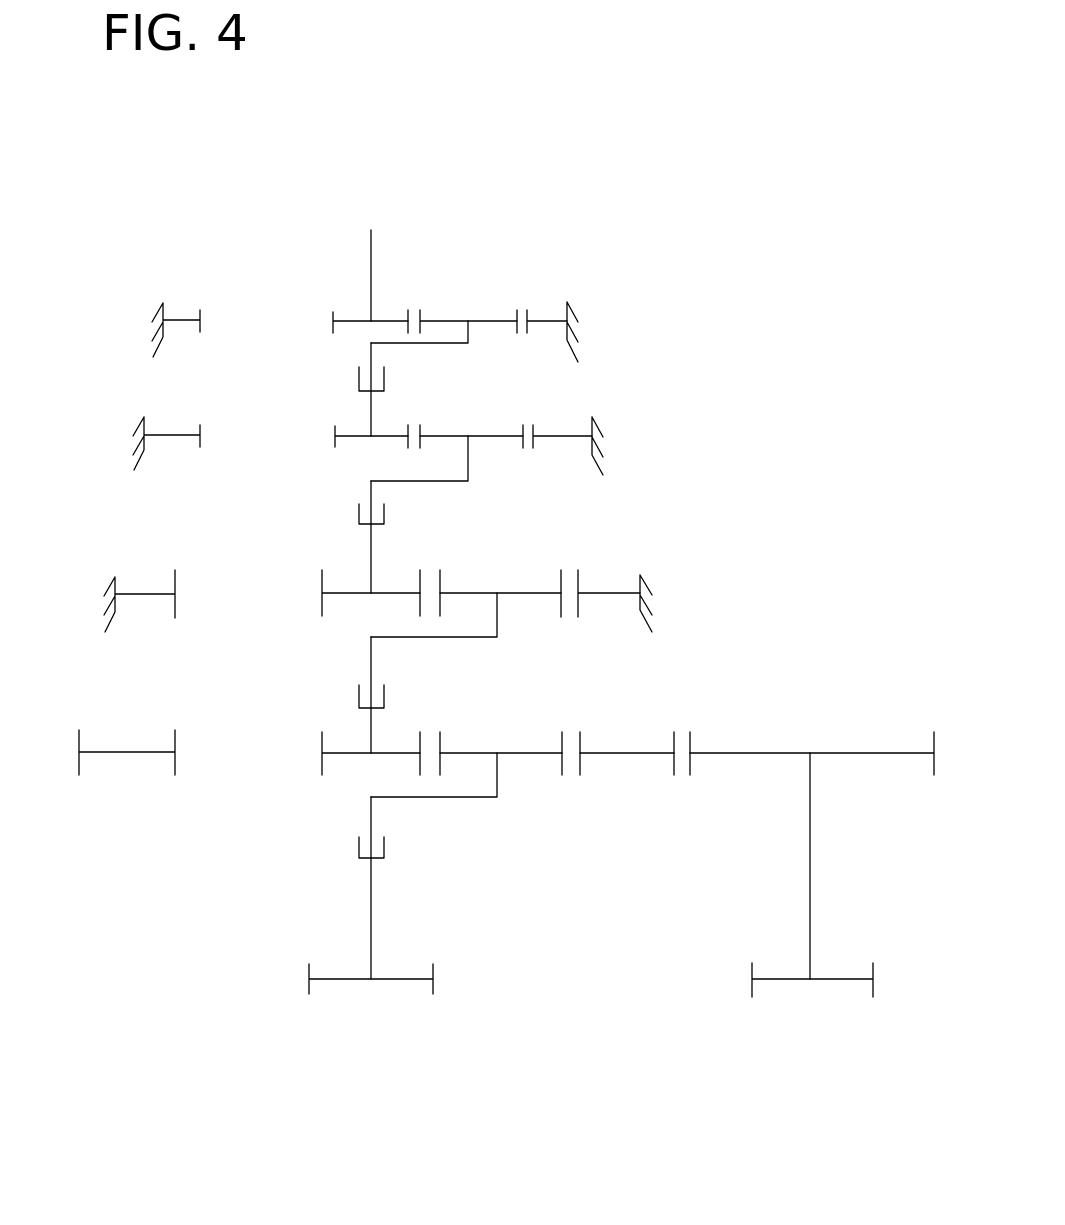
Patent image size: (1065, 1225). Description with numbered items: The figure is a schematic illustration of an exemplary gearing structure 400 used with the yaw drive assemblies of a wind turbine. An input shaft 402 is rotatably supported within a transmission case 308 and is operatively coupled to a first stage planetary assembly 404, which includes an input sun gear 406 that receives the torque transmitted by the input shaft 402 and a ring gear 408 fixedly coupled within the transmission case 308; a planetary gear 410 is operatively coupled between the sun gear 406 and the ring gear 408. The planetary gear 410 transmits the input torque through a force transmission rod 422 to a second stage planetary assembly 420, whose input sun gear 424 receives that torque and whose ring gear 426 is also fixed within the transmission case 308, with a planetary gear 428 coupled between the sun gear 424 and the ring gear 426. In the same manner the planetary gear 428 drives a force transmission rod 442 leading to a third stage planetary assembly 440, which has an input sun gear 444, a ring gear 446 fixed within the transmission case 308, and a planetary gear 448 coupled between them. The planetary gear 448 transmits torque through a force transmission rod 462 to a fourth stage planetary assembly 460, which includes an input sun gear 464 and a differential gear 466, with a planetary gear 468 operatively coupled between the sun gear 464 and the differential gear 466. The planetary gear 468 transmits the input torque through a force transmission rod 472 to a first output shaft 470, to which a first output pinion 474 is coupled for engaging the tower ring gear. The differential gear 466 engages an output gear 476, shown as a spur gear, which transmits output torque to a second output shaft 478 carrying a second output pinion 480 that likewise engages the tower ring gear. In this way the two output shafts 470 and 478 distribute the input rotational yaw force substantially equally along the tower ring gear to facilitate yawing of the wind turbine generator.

The gearing structure 400 is at (628, 150).
The input shaft 402 is at (371, 245).
The first stage planetary assembly 404 is at (135, 294).
The input sun gear 406 is at (347, 321).
The ring gear 408 is at (543, 321).
The planetary gear 410 is at (450, 321).
The transmission case 308 is at (578, 322).
The second stage planetary assembly 420 is at (102, 417).
The force transmission rod 422 is at (435, 343).
The input sun gear 424 is at (347, 436).
The ring gear 426 is at (555, 436).
The planetary gear 428 is at (492, 436).
The third stage planetary assembly 440 is at (88, 565).
The force transmission rod 442 is at (403, 481).
The input sun gear 444 is at (342, 593).
The ring gear 446 is at (602, 593).
The planetary gear 448 is at (540, 593).
The fourth stage planetary assembly 460 is at (92, 722).
The force transmission rod 462 is at (457, 637).
The input sun gear 464 is at (346, 753).
The differential gear 466 is at (612, 753).
The planetary gear 468 is at (510, 753).
The first output shaft 470 is at (371, 927).
The force transmission rod 472 is at (452, 797).
The first output pinion 474 is at (405, 979).
The output gear 476 is at (740, 753).
The second output shaft 478 is at (810, 870).
The second output pinion 480 is at (777, 979).